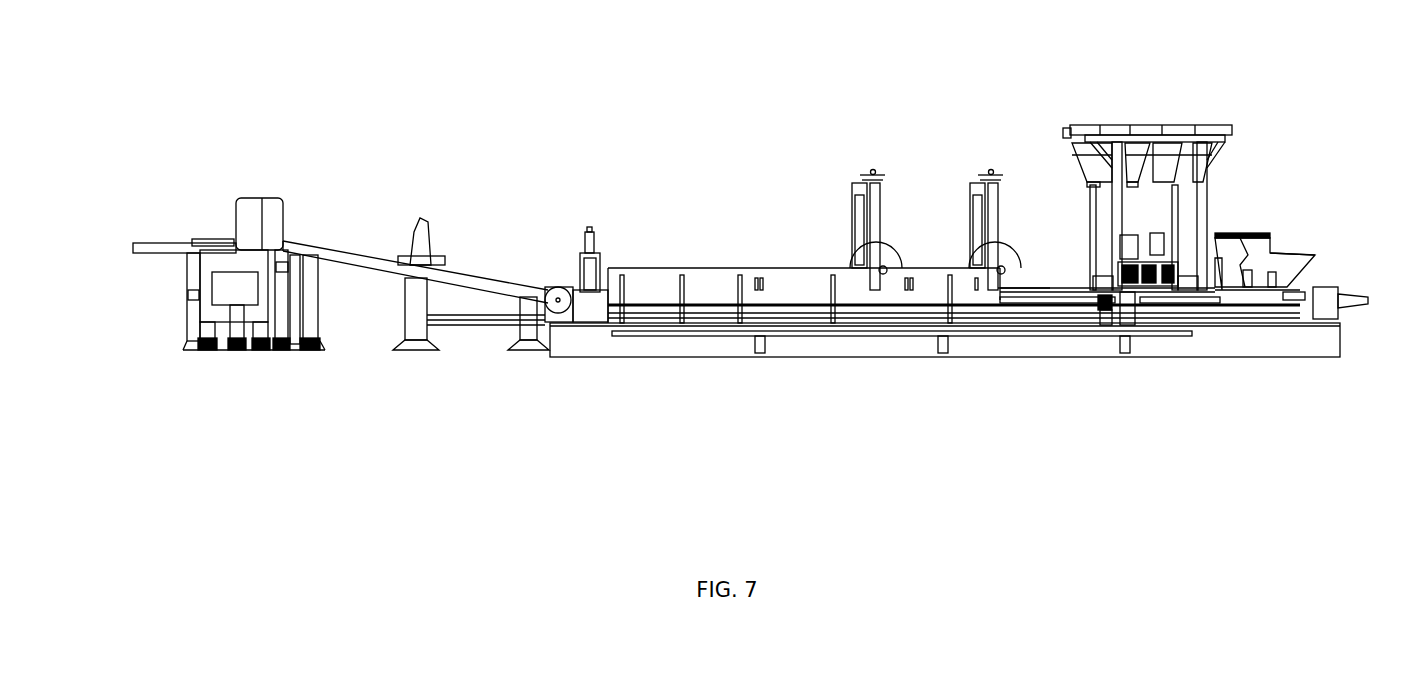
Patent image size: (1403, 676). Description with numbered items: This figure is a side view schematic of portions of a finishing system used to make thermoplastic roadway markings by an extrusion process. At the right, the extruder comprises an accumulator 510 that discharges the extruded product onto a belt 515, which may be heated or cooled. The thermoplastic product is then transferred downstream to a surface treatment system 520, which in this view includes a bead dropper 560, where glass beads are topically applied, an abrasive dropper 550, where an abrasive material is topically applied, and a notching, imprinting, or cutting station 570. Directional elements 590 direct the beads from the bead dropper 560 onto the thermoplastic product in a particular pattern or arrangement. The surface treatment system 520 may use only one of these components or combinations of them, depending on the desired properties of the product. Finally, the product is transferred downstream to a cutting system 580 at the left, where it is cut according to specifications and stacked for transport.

The accumulator 510 is at (1265, 272).
The belt 515 is at (1065, 297).
The surface treatment system 520 is at (865, 388).
The abrasive dropper 550 is at (1167, 170).
The bead dropper 560 is at (1127, 125).
The notching, imprinting, or cutting station 570 is at (975, 258).
The cutting system 580 is at (265, 197).
The directional elements 590 is at (1133, 290).